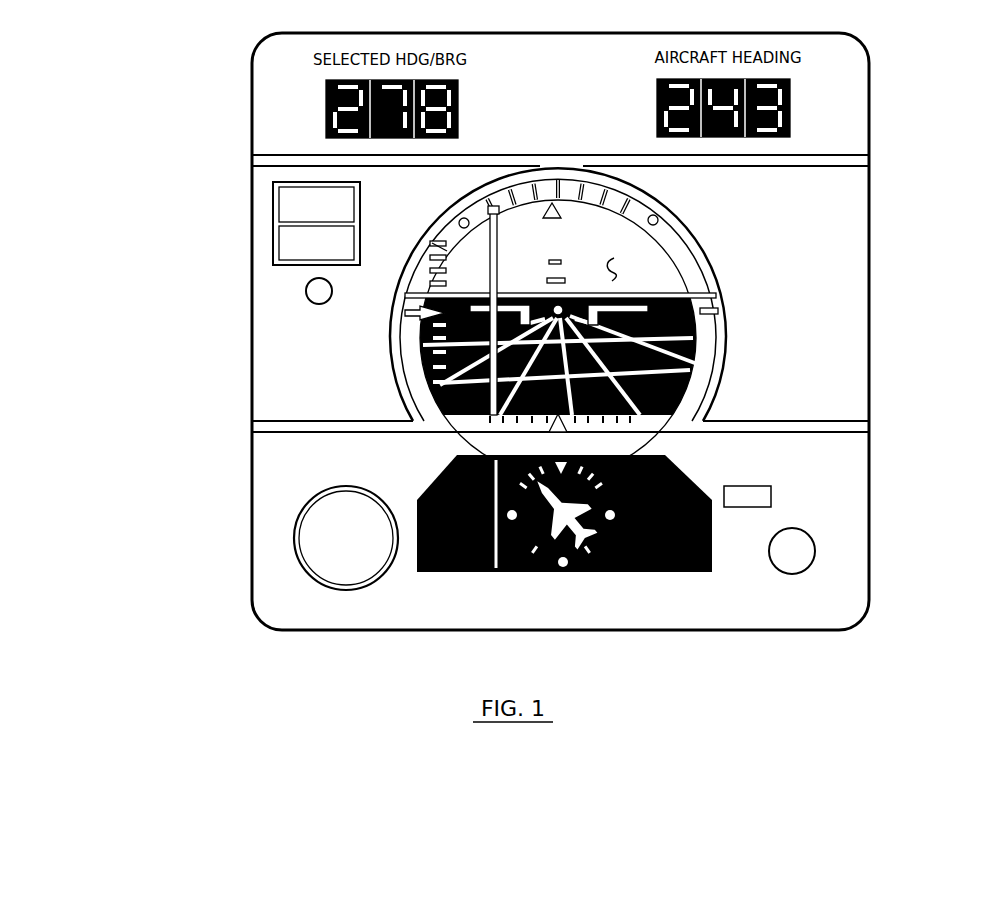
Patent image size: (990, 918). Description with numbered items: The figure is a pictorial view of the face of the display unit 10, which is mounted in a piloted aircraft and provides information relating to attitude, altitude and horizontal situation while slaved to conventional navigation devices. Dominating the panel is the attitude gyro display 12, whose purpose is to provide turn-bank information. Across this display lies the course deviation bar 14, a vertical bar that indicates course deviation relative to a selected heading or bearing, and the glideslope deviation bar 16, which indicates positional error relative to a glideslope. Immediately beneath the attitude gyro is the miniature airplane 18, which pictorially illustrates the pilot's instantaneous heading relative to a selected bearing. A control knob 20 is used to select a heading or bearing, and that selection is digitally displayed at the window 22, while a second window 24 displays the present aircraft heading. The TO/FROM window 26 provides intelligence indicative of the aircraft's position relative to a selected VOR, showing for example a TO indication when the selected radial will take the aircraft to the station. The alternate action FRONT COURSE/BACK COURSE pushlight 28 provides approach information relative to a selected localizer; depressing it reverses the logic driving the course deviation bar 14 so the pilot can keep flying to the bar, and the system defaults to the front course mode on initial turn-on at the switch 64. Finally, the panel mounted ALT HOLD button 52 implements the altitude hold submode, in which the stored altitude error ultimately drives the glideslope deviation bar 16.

The display unit 10 is at (225, 596).
The attitude gyro display 12 is at (650, 257).
The course deviation bar 14 is at (476, 363).
The glideslope deviation bar 16 is at (689, 287).
The miniature airplane 18 is at (601, 502).
The control knob 20 is at (278, 525).
The window 22 is at (311, 108).
The window 24 is at (806, 102).
The TO/FROM window 26 is at (786, 492).
The FRONT COURSE/BACK COURSE pushlight 28 is at (257, 216).
The ALT HOLD button 52 is at (831, 543).
The switch 64 is at (290, 288).